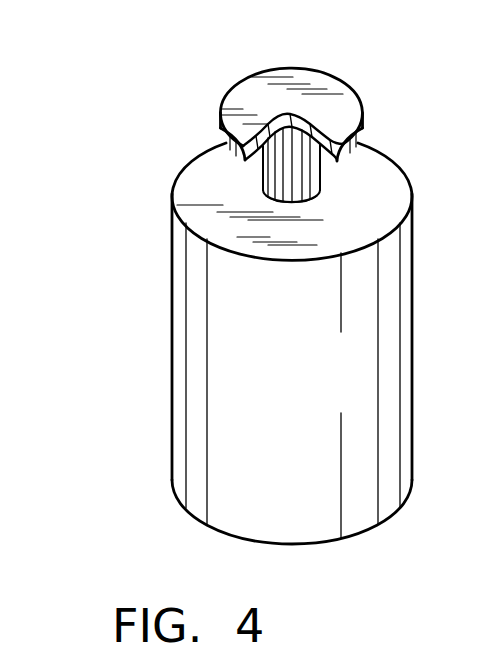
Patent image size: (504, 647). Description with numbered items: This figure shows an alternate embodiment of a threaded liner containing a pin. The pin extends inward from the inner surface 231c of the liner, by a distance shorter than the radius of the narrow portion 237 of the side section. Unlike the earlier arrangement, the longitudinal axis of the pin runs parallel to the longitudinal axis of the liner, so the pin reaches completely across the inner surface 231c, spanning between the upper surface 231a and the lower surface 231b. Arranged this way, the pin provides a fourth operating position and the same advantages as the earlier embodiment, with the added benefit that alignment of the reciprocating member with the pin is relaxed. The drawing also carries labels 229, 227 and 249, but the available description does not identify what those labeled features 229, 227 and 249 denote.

The cam assembly 229 is at (153, 48).
The cylindrical body 227 is at (118, 68).
The upper surface 231a is at (354, 162).
The lower surface 231b is at (206, 154).
The inner surface 231c is at (263, 180).
The narrow portion 237 is at (220, 130).
The base of post 249 is at (288, 203).